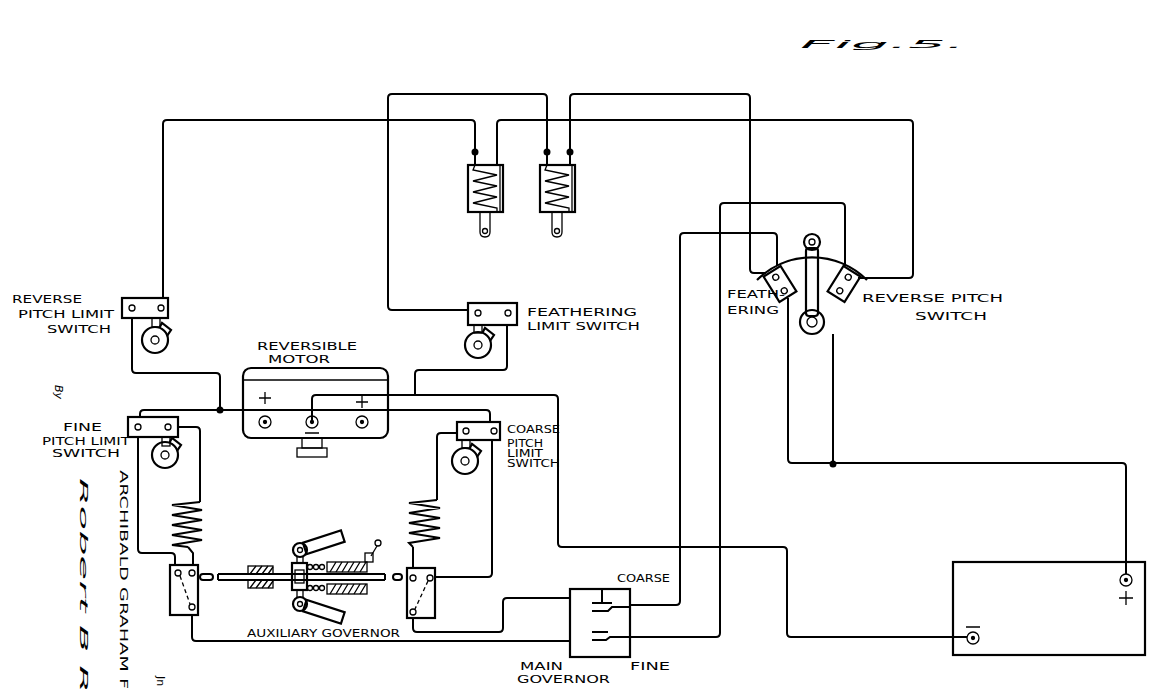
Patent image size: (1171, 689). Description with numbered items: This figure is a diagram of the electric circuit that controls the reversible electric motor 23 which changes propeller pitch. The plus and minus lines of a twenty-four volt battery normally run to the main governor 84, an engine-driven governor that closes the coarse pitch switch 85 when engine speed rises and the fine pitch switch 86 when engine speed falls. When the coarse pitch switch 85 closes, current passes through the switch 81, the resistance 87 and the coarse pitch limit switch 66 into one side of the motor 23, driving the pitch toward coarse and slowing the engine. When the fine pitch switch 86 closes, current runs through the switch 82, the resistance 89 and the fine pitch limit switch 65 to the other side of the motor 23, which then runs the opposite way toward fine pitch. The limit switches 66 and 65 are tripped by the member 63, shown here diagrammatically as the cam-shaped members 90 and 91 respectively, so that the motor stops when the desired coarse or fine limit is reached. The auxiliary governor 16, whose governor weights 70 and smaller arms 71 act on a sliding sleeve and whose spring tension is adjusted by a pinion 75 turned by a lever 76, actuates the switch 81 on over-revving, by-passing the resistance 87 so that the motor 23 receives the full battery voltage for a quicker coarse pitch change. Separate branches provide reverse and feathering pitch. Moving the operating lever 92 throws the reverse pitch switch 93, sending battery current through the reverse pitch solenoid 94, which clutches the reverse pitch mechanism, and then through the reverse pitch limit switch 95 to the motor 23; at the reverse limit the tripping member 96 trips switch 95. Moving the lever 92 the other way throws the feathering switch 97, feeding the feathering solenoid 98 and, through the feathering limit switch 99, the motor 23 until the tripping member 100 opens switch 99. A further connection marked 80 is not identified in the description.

The auxiliary governor 16 is at (294, 613).
The reversible electric motor 23 is at (360, 378).
The member 63 is at (1048, 647).
The fine pitch limit switch 65 is at (129, 418).
The coarse pitch limit switch 66 is at (498, 423).
The governor weights 70 is at (328, 538).
The smaller arms 71 is at (295, 566).
The pinion 75 is at (374, 560).
The lever 76 is at (376, 541).
The conductor 80 is at (562, 515).
The switch 81 is at (436, 600).
The switch 82 is at (175, 604).
The main governor 84 is at (628, 629).
The coarse pitch switch 85 is at (602, 589).
The fine pitch switch 86 is at (610, 644).
The resistance 87 is at (440, 533).
The resistance 89 is at (203, 523).
The cam-shaped member 90 is at (468, 475).
The cam-shaped member 91 is at (788, 300).
The operating lever 92 is at (821, 245).
The reverse pitch switch 93 is at (848, 298).
The reverse pitch solenoid 94 is at (472, 212).
The reverse pitch limit switch 95 is at (170, 303).
The tripping member 96 is at (172, 343).
The feathering switch 97 is at (165, 468).
The feathering solenoid 98 is at (576, 210).
The feathering limit switch 99 is at (515, 326).
The tripping member 100 is at (465, 342).